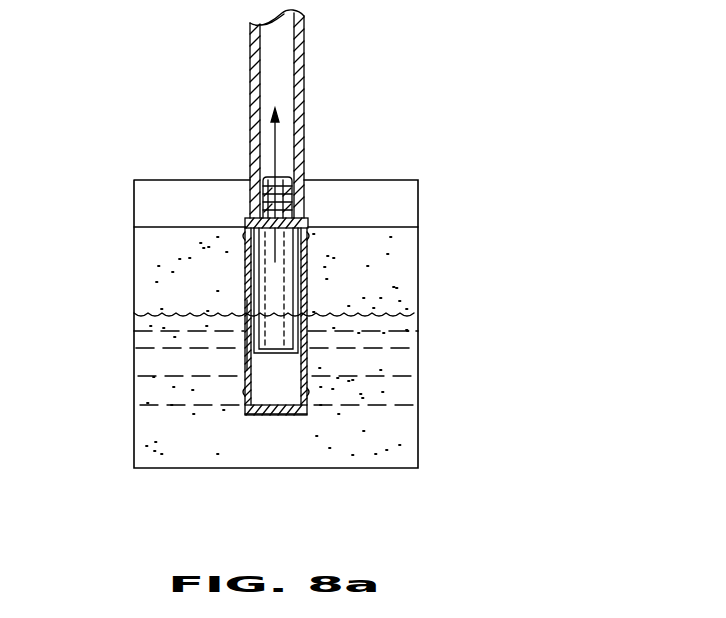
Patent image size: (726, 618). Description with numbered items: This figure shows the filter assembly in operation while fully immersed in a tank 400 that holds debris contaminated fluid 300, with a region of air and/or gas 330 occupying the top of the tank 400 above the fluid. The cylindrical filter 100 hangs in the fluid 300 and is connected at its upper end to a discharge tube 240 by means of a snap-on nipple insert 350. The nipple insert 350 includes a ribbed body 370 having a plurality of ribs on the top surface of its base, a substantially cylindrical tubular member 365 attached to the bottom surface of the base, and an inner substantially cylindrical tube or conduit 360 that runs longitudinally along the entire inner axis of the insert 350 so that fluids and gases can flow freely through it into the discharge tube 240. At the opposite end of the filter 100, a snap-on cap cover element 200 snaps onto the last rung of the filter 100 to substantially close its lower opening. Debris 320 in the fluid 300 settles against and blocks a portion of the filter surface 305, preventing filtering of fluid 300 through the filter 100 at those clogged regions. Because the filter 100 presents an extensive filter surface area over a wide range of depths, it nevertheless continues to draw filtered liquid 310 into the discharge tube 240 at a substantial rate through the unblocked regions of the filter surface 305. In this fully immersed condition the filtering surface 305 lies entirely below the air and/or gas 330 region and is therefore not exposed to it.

The filter 100 is at (206, 358).
The snap-on cap cover element 200 is at (288, 414).
The discharge tube 240 is at (304, 26).
The debris contaminated fluid 300 is at (403, 387).
The filter surface 305 is at (296, 372).
The filtered liquid 310 is at (272, 405).
The debris 320 is at (404, 280).
The air and/or gas 330 is at (404, 205).
The snap-on nipple insert 350 is at (302, 136).
The inner substantially cylindrical tube or conduit 360 is at (282, 337).
The substantially cylindrical tubular member 365 is at (248, 336).
The ribbed body 370 is at (296, 178).
The tank 400 is at (378, 469).